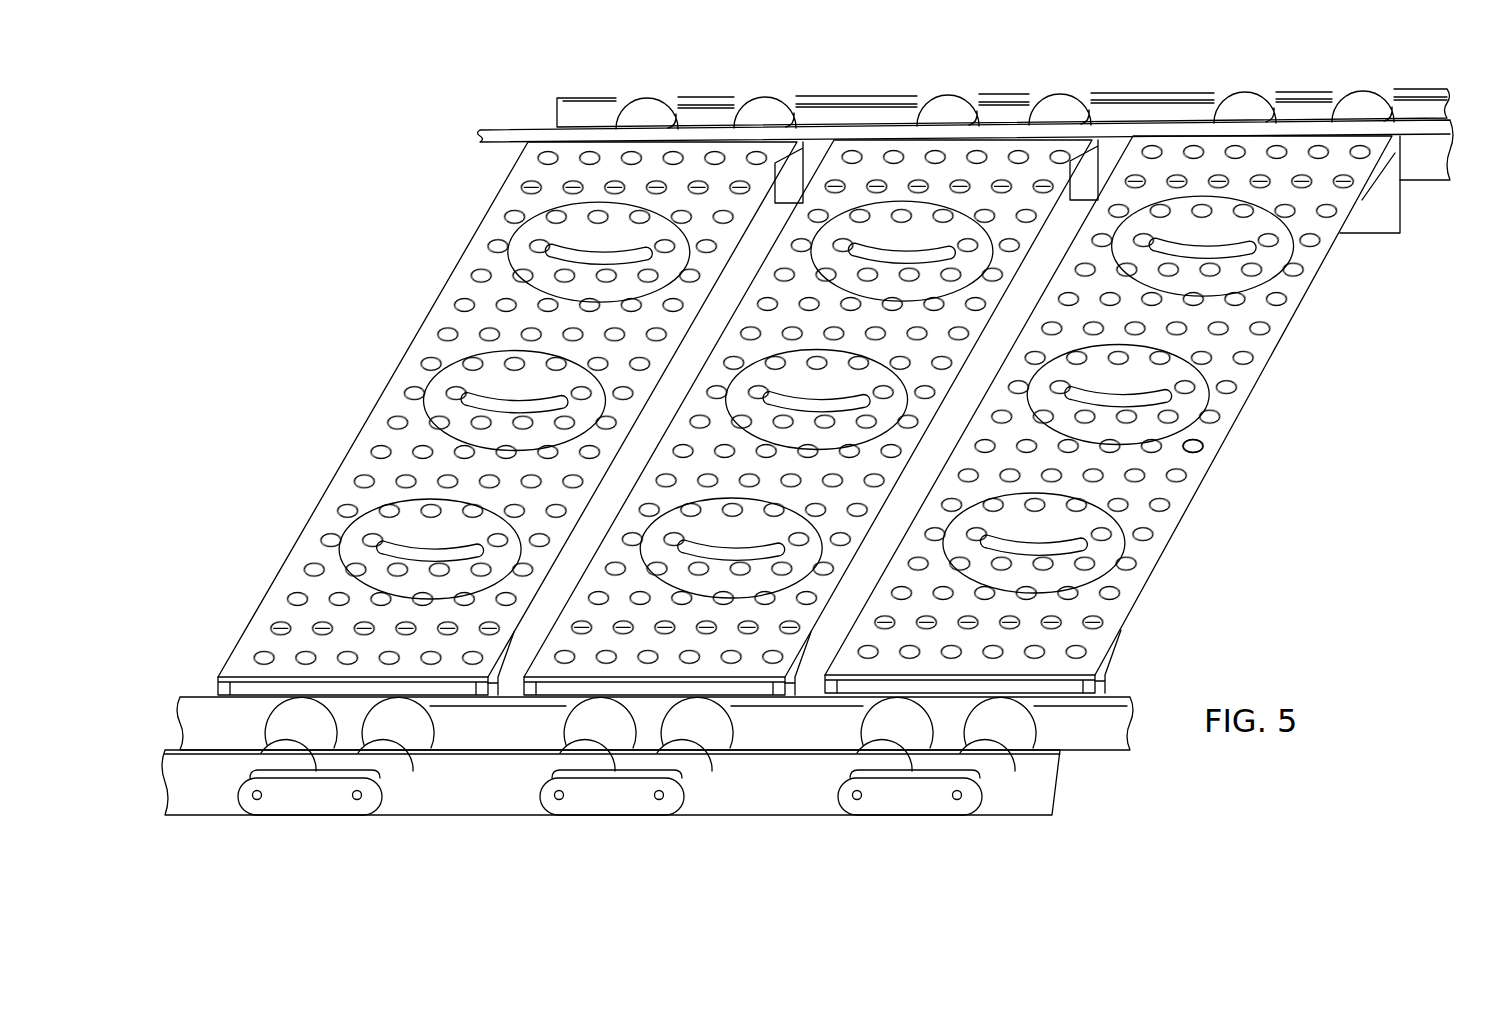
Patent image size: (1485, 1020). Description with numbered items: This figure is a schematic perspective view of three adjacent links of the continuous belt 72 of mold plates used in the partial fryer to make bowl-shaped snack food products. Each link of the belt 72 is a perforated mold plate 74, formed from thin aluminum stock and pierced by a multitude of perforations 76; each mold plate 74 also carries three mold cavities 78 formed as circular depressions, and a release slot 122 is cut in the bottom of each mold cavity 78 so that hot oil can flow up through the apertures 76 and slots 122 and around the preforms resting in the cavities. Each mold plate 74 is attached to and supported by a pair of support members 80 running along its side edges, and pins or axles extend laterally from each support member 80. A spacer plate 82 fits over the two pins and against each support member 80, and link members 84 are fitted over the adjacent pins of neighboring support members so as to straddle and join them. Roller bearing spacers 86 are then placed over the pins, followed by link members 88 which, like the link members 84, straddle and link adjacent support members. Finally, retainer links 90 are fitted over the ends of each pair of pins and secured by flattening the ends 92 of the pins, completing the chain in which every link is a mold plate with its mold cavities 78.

The continuous belt 72 is at (1098, 55).
The perforated mold plate 74 is at (448, 282).
The perforation 76 is at (1200, 452).
The mold cavity 78 is at (1278, 262).
The support member 80 is at (1398, 203).
The spacer plate 82 is at (690, 132).
The link member 84 is at (500, 135).
The roller bearing spacer 86 is at (653, 109).
The link member 88 is at (594, 97).
The retainer link 90 is at (725, 108).
The flattened pin end 92 is at (260, 806).
The release slot 122 is at (1236, 262).